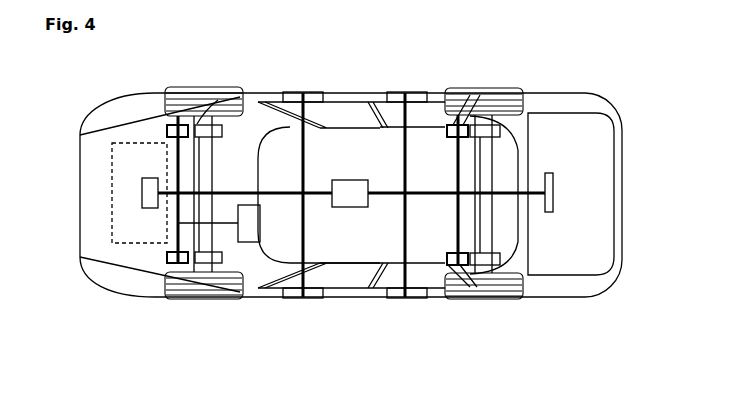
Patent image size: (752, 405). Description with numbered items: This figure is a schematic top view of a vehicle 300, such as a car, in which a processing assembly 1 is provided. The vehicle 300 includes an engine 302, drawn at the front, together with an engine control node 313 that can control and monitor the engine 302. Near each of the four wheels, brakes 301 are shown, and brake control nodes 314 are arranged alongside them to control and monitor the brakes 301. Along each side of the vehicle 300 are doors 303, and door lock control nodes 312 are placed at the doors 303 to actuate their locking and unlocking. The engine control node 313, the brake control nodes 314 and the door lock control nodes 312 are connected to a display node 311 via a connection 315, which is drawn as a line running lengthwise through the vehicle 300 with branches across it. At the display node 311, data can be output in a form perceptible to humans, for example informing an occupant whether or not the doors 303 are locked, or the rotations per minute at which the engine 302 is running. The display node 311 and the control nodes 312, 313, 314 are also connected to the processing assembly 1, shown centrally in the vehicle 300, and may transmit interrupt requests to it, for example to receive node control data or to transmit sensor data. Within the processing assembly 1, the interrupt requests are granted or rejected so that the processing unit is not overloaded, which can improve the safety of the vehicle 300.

The processing assembly 1 is at (350, 193).
The vehicle 300 is at (117, 275).
The brakes 301 is at (203, 128).
The engine 302 is at (150, 159).
The doors 303 is at (348, 98).
The display node 311 is at (252, 222).
The door lock control nodes 312 is at (307, 93).
The engine control node 313 is at (150, 195).
The brake control nodes 314 is at (180, 131).
The connection 315 is at (418, 197).